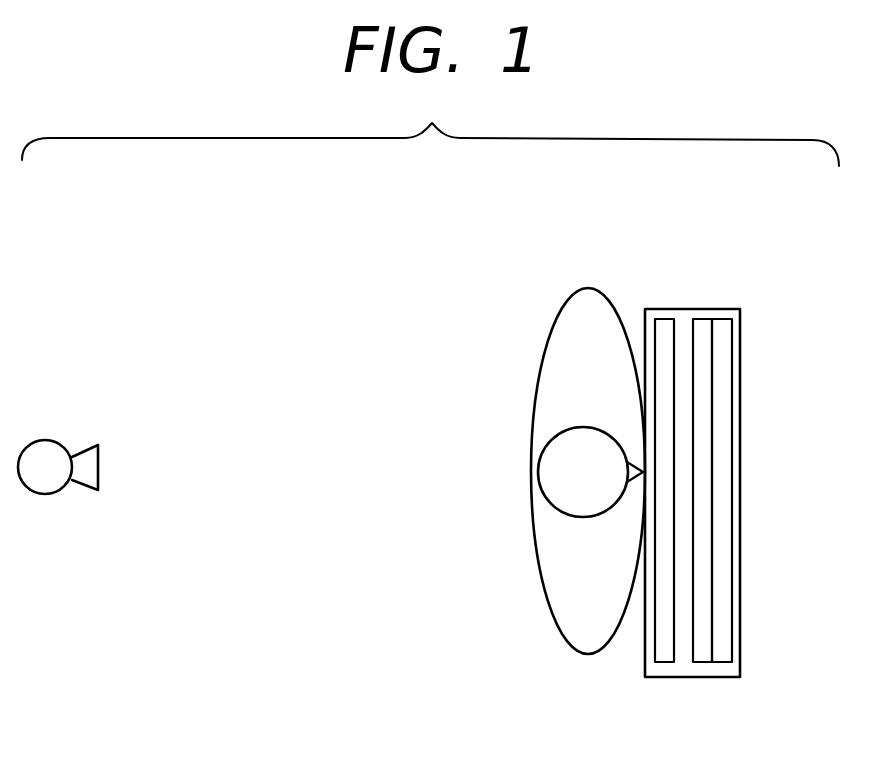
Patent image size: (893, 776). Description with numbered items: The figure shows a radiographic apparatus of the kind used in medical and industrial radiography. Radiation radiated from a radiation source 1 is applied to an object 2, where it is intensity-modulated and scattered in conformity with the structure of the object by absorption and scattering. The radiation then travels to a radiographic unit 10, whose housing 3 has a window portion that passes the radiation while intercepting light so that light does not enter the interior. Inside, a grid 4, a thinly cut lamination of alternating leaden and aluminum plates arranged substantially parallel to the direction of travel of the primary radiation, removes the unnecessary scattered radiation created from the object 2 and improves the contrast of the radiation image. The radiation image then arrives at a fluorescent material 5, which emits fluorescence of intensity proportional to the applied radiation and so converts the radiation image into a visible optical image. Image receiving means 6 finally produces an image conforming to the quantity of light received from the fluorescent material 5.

The radiation source 1 is at (56, 440).
The object 2 is at (594, 288).
The housing 3 is at (742, 358).
The grid 4 is at (663, 319).
The fluorescent material 5 is at (701, 319).
The image receiving means 6 is at (727, 319).
The radiographic unit 10 is at (782, 533).